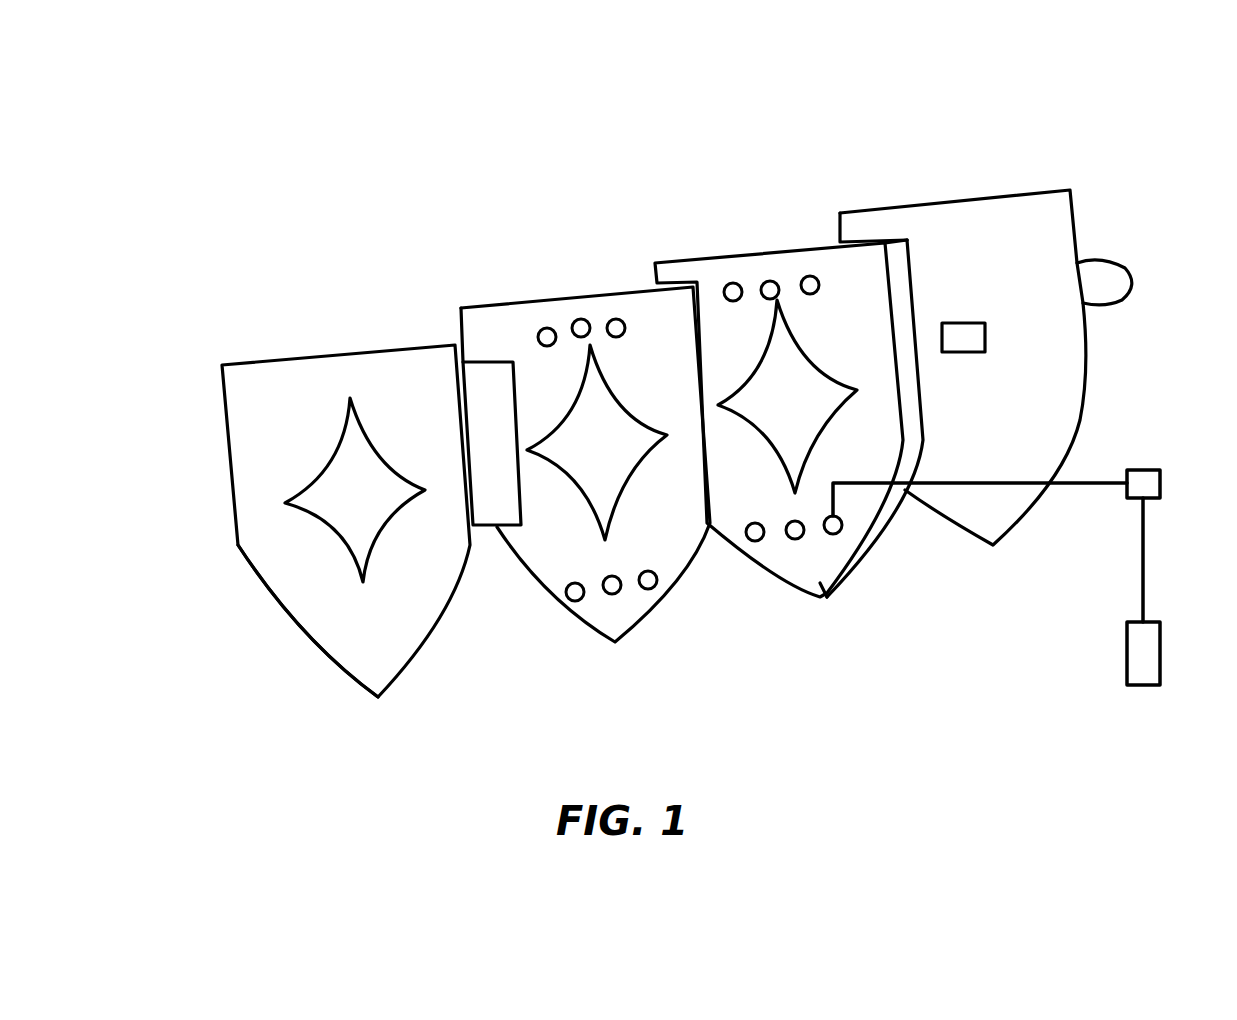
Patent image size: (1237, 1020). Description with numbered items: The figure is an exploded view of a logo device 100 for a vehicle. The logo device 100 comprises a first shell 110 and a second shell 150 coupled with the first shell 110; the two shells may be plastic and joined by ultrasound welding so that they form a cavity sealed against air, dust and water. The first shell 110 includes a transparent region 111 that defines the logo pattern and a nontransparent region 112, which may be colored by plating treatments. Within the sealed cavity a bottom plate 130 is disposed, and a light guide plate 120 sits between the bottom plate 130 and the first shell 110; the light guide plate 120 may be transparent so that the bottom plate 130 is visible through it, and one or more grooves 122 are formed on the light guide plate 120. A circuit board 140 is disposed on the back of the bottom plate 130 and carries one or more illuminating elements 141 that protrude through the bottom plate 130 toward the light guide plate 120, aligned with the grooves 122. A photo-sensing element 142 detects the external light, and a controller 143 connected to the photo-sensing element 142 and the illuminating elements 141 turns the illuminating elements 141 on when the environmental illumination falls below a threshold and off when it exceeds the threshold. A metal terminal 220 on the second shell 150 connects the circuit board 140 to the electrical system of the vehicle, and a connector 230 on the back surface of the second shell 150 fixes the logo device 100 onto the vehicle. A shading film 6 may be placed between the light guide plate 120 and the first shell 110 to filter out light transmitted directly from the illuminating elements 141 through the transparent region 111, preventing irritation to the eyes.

The logo device 100 is at (455, 130).
The shading film 6 is at (477, 395).
The first shell 110 is at (356, 405).
The transparent region 111 is at (356, 560).
The nontransparent region 112 is at (256, 538).
The light guide plate 120 is at (657, 328).
The grooves 122 is at (613, 320).
The bottom plate 130 is at (788, 282).
The circuit board 140 is at (884, 552).
The illuminating elements 141 is at (794, 540).
The photo-sensing element 142 is at (1157, 622).
The controller 143 is at (1157, 468).
The second shell 150 is at (947, 225).
The metal terminal 220 is at (960, 340).
The connector 230 is at (1112, 290).